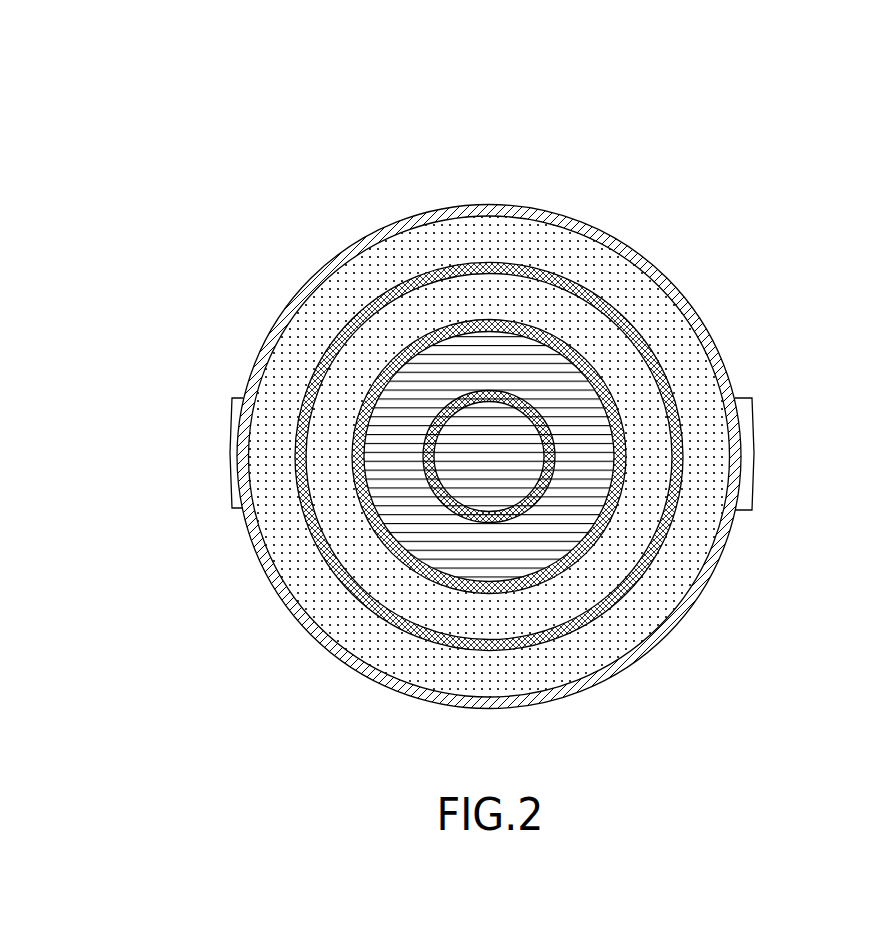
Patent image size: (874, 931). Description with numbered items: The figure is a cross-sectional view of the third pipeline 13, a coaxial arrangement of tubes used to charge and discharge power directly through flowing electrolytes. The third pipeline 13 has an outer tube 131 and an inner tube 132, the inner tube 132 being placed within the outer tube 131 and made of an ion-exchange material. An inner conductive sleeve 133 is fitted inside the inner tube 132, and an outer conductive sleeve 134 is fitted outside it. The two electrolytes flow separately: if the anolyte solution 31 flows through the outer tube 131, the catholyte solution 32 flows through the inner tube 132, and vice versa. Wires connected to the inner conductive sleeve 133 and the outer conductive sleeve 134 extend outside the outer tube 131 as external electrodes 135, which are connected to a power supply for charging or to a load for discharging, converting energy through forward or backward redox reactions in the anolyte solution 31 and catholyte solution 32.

The third pipeline 13 is at (265, 57).
The outer tube 131 is at (497, 217).
The inner tube 132 is at (477, 318).
The inner conductive sleeve 133 is at (438, 450).
The outer conductive sleeve 134 is at (414, 320).
The external electrodes 135 is at (228, 453).
The anolyte solution 31 is at (618, 357).
The catholyte solution 32 is at (457, 455).